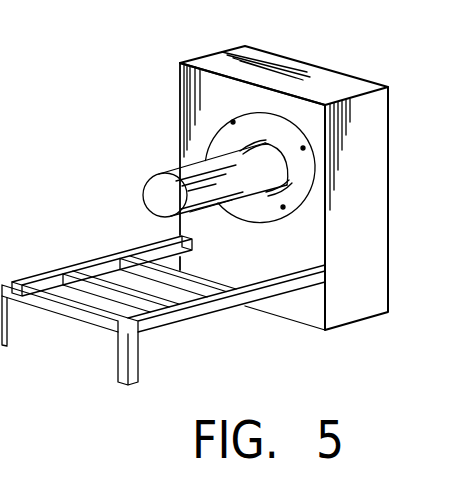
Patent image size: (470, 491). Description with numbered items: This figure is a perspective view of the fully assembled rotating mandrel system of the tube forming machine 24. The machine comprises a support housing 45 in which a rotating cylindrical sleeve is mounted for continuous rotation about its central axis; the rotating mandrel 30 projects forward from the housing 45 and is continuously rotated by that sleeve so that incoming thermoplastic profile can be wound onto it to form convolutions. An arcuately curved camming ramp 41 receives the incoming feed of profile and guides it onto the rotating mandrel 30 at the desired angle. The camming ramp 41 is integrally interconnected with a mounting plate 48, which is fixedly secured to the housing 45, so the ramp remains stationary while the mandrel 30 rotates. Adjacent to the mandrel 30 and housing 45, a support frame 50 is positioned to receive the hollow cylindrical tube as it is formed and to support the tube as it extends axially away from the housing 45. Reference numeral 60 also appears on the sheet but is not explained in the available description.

The tube forming machine 24 is at (388, 170).
The rotating mandrel 30 is at (157, 173).
The camming ramp 41 is at (283, 185).
The support housing 45 is at (218, 112).
The mounting plate 48 is at (290, 118).
The support frame 50 is at (219, 311).
The base 60 is at (20, 437).